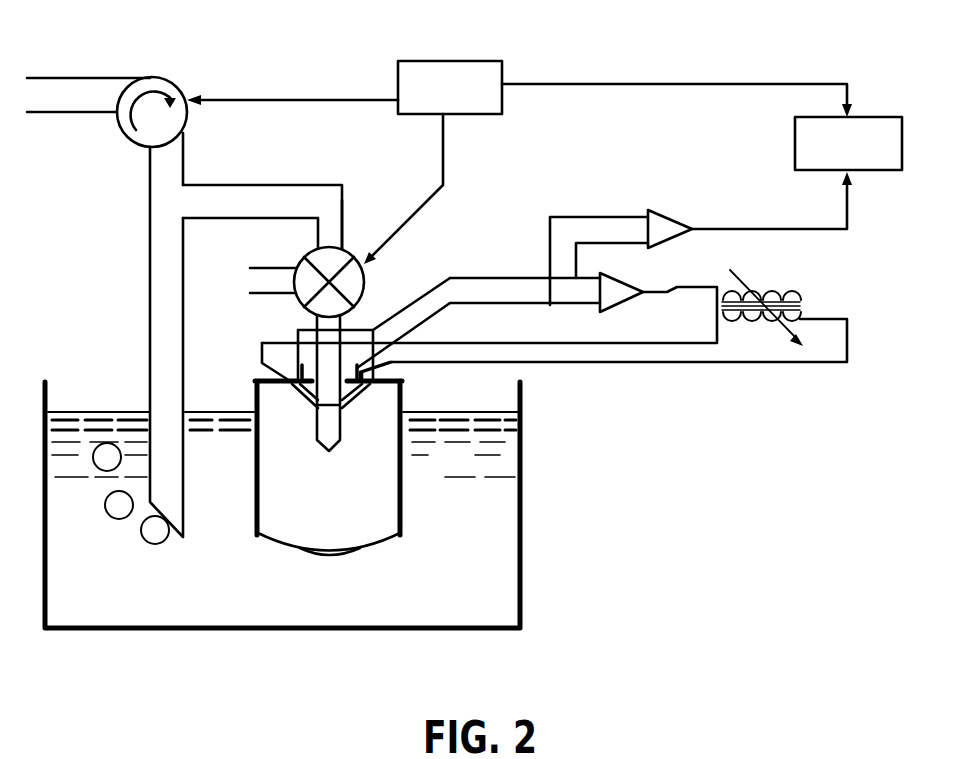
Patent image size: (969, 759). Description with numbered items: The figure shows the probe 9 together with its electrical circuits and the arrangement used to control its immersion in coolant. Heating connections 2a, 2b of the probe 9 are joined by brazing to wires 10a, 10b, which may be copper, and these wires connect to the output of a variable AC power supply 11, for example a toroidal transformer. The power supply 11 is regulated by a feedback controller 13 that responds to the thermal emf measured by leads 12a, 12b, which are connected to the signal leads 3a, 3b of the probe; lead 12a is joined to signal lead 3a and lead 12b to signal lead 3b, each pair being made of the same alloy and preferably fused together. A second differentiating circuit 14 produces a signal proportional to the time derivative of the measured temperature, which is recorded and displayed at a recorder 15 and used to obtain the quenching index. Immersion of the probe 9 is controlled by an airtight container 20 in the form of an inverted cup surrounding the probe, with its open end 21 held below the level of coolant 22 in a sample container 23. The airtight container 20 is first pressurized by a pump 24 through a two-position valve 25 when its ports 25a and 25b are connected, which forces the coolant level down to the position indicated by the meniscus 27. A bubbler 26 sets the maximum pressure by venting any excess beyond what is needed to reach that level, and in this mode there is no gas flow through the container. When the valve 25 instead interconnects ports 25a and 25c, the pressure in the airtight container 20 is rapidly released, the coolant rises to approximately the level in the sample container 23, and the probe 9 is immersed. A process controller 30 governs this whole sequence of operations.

The pump 24 is at (183, 92).
The process controller 30 is at (437, 103).
The recorder 15 is at (835, 159).
The second differentiating circuit 14 is at (665, 215).
The feedback controller 13 is at (630, 308).
The variable AC power supply 11 is at (798, 290).
The two-position valve 25 is at (353, 240).
The port 25a is at (375, 300).
The port 25b is at (327, 240).
The port 25c is at (292, 268).
The lead 12a is at (295, 345).
The lead 12b is at (362, 372).
The wire 10a is at (255, 385).
The wire 10b is at (390, 367).
The heating connection 2a is at (292, 393).
The heating connection 2b is at (345, 400).
The signal lead 3a is at (305, 405).
The signal lead 3b is at (403, 458).
The probe 9 is at (320, 470).
The airtight container 20 is at (405, 515).
The open end 21 is at (388, 552).
The coolant 22 is at (490, 425).
The sample container 23 is at (523, 588).
The bubbler 26 is at (155, 544).
The meniscus 27 is at (300, 552).